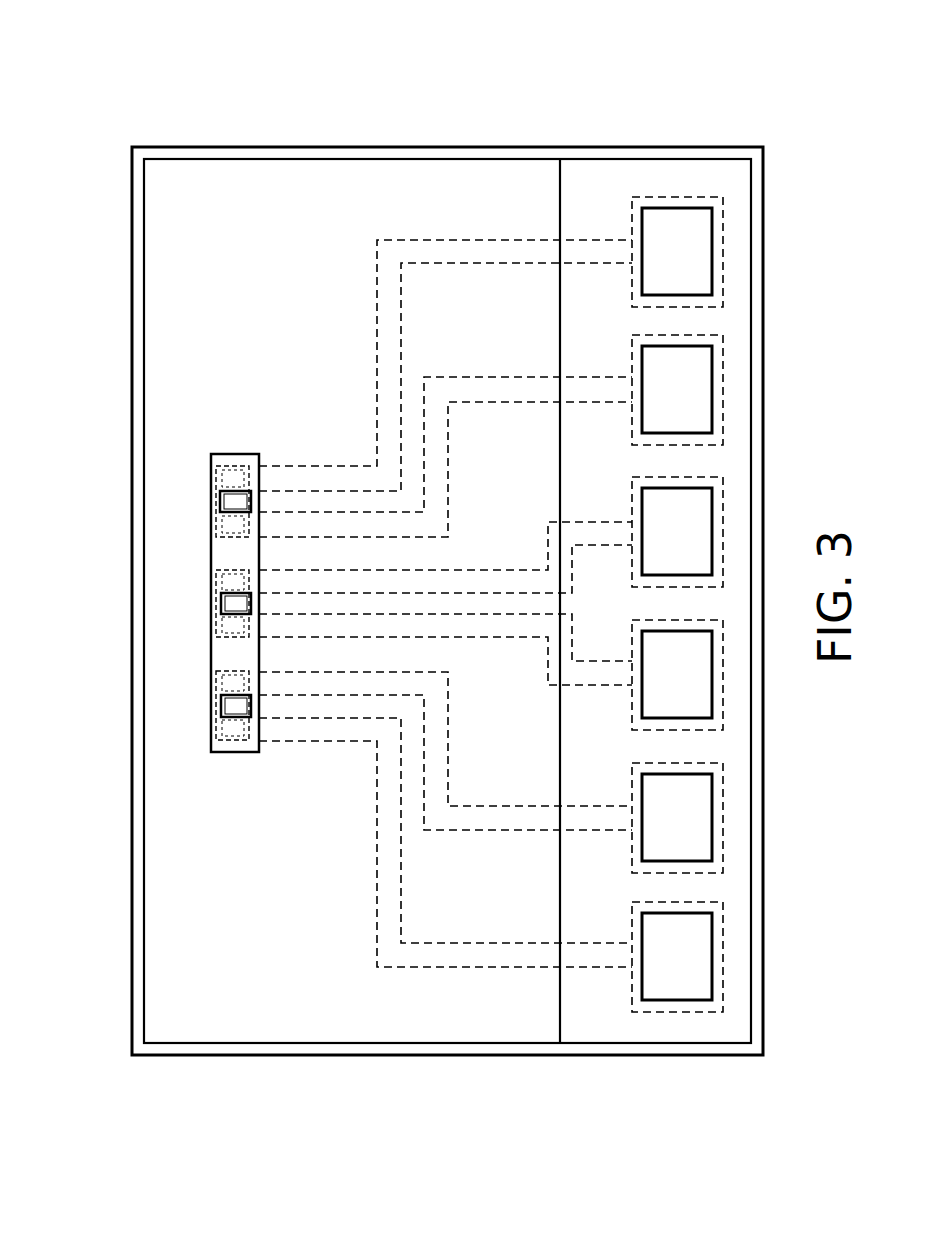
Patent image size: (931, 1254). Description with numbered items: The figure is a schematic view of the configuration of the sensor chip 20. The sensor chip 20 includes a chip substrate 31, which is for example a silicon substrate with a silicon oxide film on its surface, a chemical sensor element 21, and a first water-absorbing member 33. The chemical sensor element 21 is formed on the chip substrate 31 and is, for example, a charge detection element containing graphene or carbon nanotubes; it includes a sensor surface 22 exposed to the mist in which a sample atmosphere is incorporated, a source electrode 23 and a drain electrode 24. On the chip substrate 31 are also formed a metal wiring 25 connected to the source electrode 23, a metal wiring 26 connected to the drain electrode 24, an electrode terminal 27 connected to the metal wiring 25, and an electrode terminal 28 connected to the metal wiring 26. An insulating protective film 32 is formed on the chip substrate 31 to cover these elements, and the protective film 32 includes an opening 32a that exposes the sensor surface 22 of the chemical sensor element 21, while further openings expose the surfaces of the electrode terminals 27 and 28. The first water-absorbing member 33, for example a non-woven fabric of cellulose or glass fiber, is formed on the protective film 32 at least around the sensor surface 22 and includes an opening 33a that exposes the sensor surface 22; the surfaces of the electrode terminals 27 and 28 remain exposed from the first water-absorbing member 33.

The sensor chip 20 is at (86, 398).
The chemical sensor element 21 is at (209, 603).
The sensor surface 22 is at (240, 712).
The source electrode 23 is at (212, 528).
The drain electrode 24 is at (212, 468).
The metal wiring 25 is at (430, 955).
The metal wiring 26 is at (513, 816).
The electrode terminal 27 is at (687, 950).
The electrode terminal 28 is at (687, 820).
The chip substrate 31 is at (403, 146).
The protective film 32 is at (594, 205).
The opening 32a is at (235, 698).
The first water-absorbing member 33 is at (272, 205).
The opening 33a is at (237, 657).